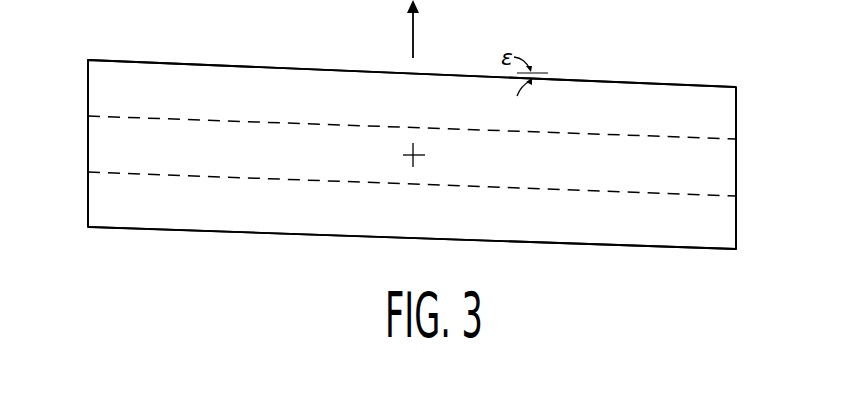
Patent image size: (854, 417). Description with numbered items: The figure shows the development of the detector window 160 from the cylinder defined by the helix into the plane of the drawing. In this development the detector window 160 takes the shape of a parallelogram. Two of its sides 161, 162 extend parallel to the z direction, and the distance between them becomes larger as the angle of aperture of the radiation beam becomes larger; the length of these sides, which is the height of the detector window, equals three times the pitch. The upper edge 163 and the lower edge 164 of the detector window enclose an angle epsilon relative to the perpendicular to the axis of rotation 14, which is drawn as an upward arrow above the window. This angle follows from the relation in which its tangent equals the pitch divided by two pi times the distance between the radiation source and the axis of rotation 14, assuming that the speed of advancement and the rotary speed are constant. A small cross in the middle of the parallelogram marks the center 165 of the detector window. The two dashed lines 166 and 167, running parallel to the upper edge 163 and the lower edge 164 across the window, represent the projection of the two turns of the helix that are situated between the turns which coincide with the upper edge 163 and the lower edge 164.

The axis of rotation 14 is at (414, 33).
The detector window 160 is at (794, 246).
The side of detector window 161 is at (88, 90).
The side of detector window 162 is at (738, 114).
The upper edge 163 is at (322, 68).
The lower edge 164 is at (194, 230).
The center of detector window 165 is at (425, 155).
The dashed line 166 is at (158, 116).
The dashed line 167 is at (236, 176).